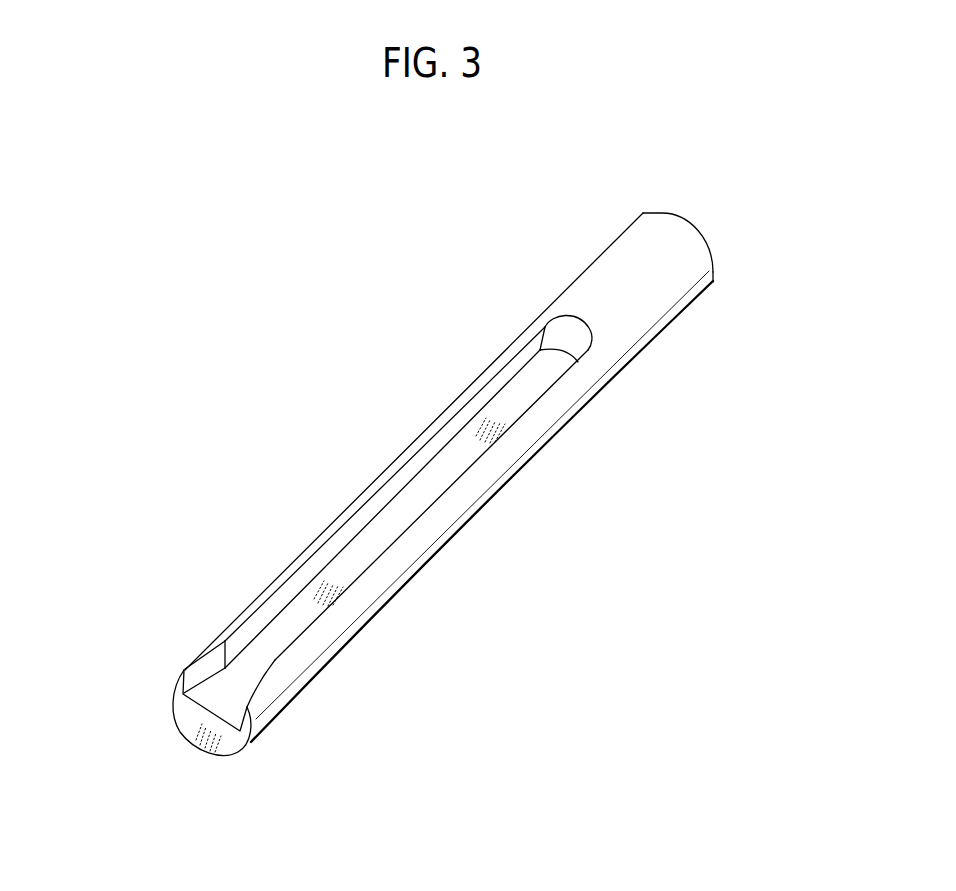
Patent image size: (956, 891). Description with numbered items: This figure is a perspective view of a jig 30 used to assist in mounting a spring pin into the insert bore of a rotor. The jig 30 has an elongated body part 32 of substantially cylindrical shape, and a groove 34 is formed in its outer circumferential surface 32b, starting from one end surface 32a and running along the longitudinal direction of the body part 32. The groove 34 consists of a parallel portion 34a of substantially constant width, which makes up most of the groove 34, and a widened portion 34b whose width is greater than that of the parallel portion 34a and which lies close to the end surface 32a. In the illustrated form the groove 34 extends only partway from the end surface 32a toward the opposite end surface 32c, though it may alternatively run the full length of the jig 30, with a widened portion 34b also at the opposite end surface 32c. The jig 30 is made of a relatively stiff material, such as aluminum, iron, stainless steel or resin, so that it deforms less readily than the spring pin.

The jig 30 is at (354, 350).
The body part 32 is at (582, 272).
The end surface 32a is at (183, 711).
The outer circumferential surface 32b is at (663, 311).
The opposite end surface 32c is at (736, 234).
The groove 34 is at (509, 381).
The parallel portion 34a is at (380, 502).
The widened portion 34b is at (215, 675).